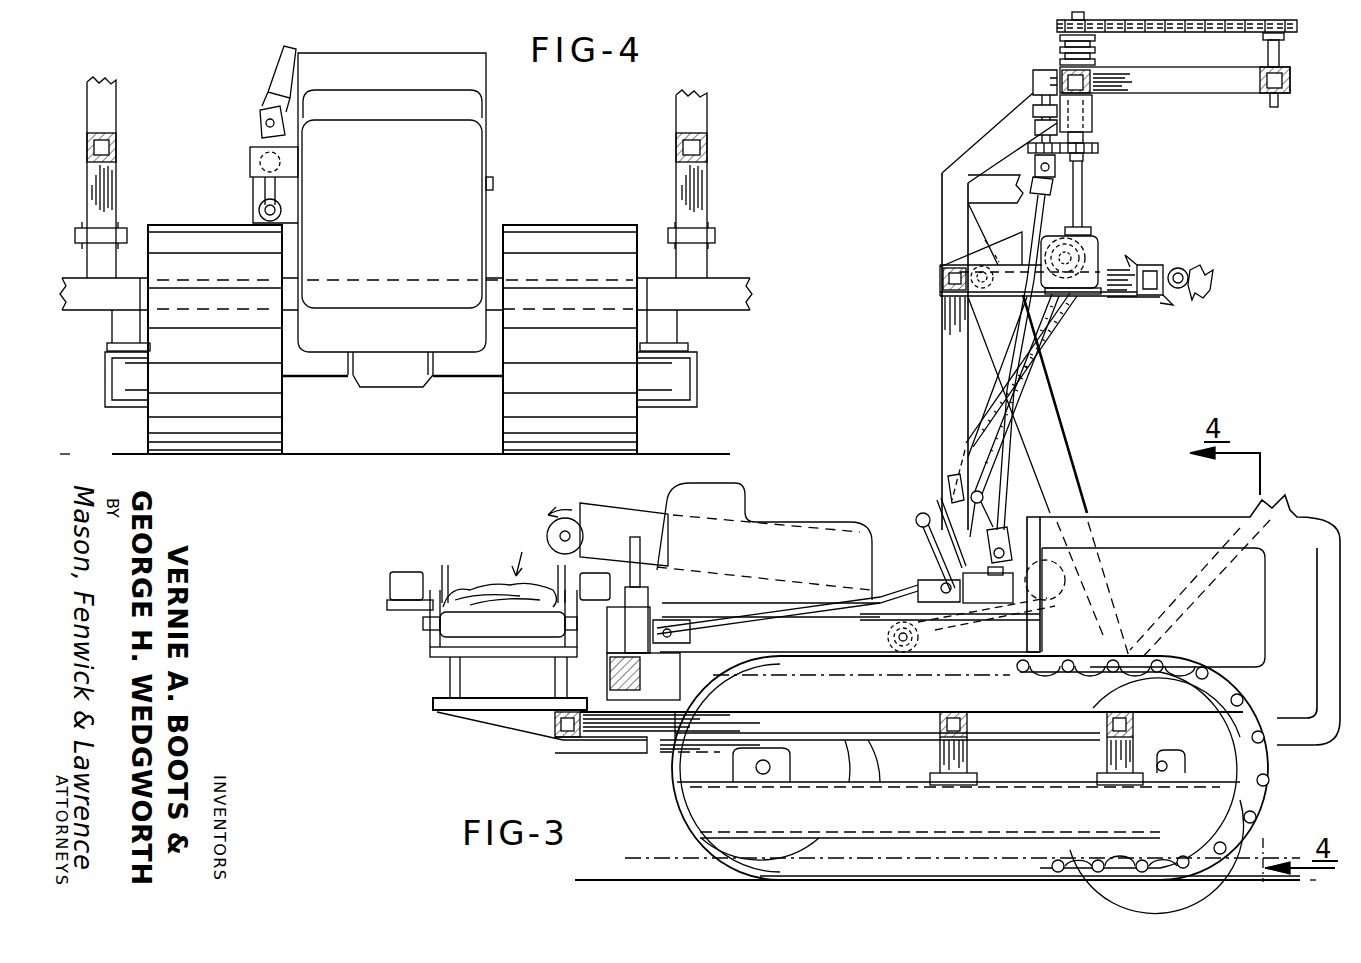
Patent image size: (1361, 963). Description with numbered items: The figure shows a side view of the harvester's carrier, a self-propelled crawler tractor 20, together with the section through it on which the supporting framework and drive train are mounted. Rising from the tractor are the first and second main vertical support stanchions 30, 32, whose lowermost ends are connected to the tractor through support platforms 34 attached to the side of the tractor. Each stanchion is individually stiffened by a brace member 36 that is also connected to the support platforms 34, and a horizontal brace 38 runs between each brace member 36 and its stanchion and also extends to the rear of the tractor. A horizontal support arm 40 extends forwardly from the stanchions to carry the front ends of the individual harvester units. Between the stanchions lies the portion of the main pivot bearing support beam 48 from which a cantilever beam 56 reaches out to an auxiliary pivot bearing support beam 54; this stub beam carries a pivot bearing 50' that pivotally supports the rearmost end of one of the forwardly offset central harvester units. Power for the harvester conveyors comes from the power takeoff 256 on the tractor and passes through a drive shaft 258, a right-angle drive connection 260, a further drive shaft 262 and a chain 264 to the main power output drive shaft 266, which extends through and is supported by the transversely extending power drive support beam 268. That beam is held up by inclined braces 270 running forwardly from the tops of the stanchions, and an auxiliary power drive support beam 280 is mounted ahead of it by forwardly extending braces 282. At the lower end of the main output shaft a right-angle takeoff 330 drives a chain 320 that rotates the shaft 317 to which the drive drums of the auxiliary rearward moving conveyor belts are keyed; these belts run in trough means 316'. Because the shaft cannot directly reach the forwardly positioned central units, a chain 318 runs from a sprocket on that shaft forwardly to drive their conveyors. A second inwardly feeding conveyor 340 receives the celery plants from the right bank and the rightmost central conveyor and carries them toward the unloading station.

In FIG. 4, the crawler tractor 20 is at (502, 152).
In FIG. 3, the crawler tractor 20 is at (1148, 517).
In FIG. 4, the first main vertical support stanchion 30 is at (107, 117).
In FIG. 3, the first main vertical support stanchion 30 is at (940, 400).
In FIG. 4, the second main vertical support stanchion 32 is at (700, 115).
In FIG. 4, the support platform 34 is at (107, 362).
In FIG. 3, the support platform 34 is at (997, 782).
In FIG. 4, the brace member 36 is at (96, 252).
In FIG. 3, the brace member 36 is at (1060, 452).
In FIG. 3, the horizontal brace 38 is at (1010, 718).
In FIG. 3, the horizontal support arm 40 is at (991, 178).
In FIG. 3, the main pivot bearing support beam 48 is at (940, 280).
In FIG. 3, the pivot bearing 50' is at (1204, 265).
In FIG. 3, the auxiliary pivot bearing support beam 54 is at (1148, 265).
In FIG. 3, the cantilever beam 56 is at (1118, 305).
In FIG. 3, the power takeoff 256 is at (640, 620).
In FIG. 4, the drive shaft 258 is at (262, 192).
In FIG. 3, the drive shaft 258 is at (757, 624).
In FIG. 3, the right-angle drive connection 260 is at (995, 605).
In FIG. 4, the drive shaft 262 is at (278, 72).
In FIG. 3, the drive shaft 262 is at (1030, 500).
In FIG. 3, the chain 264 is at (1090, 139).
In FIG. 3, the main power output drive shaft 266 is at (1084, 200).
In FIG. 3, the power drive support beam 268 is at (1093, 75).
In FIG. 3, the inclined brace 270 is at (1003, 122).
In FIG. 3, the auxiliary power drive support beam 280 is at (1290, 80).
In FIG. 3, the forwardly extending brace 282 is at (1192, 98).
In FIG. 3, the trough means 316' is at (607, 521).
In FIG. 3, the shaft 317 is at (905, 652).
In FIG. 3, the chain 318 is at (1040, 640).
In FIG. 3, the chain 320 is at (1052, 350).
In FIG. 3, the right-angle takeoff 330 is at (1105, 247).
In FIG. 3, the second inwardly feeding conveyor 340 is at (500, 637).